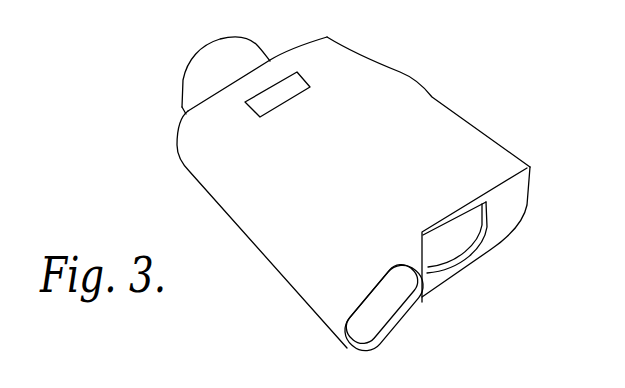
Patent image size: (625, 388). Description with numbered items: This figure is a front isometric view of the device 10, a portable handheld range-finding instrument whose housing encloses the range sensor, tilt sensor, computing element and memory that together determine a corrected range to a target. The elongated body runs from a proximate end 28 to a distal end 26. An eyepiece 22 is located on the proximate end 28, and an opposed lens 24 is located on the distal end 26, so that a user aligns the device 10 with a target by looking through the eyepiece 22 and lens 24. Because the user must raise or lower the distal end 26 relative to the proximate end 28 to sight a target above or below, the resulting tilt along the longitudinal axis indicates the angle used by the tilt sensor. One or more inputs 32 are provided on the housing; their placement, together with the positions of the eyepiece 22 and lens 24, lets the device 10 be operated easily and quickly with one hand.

The device 10 is at (150, 165).
The eyepiece 22 is at (202, 65).
The lens 24 is at (390, 299).
The distal end 26 is at (457, 237).
The proximate end 28 is at (186, 115).
The inputs 32 is at (296, 85).